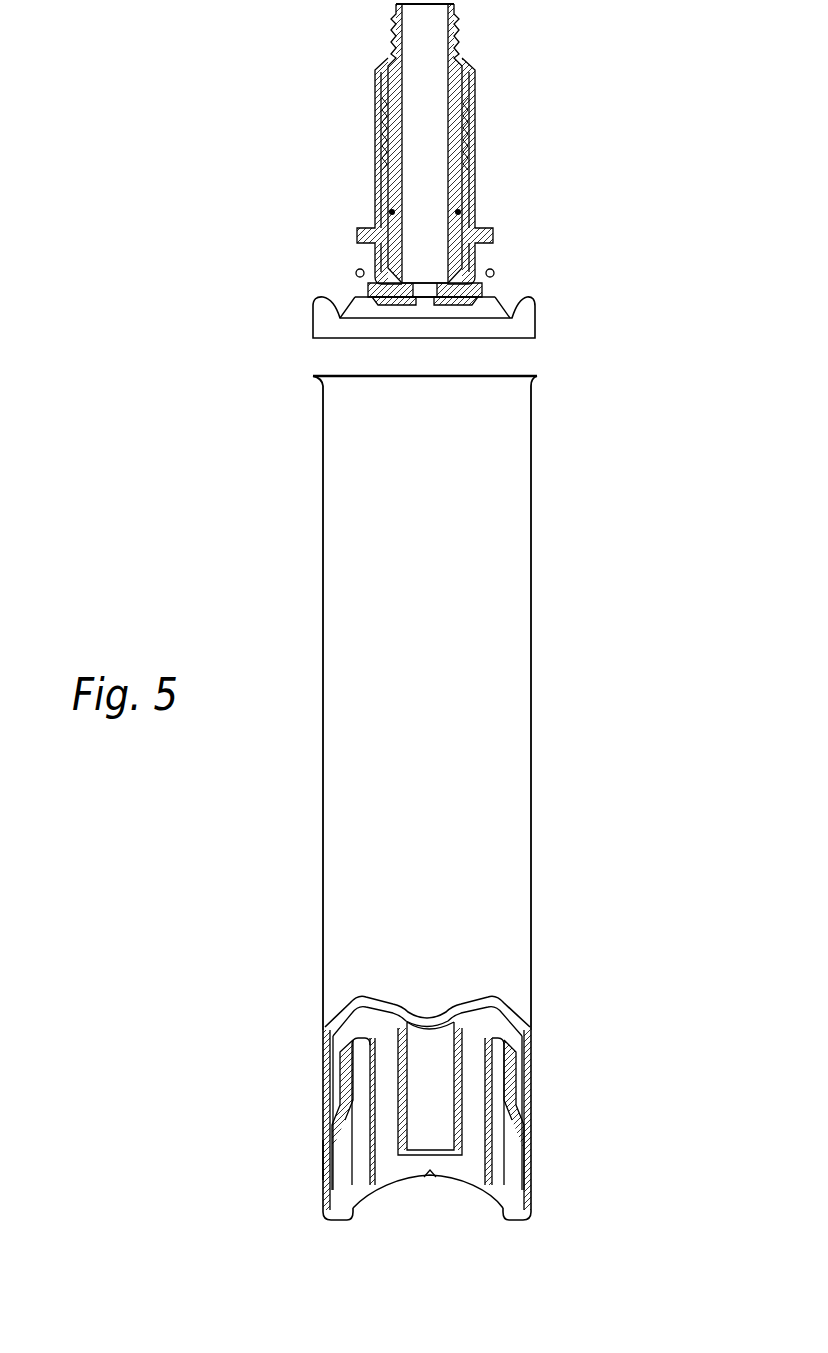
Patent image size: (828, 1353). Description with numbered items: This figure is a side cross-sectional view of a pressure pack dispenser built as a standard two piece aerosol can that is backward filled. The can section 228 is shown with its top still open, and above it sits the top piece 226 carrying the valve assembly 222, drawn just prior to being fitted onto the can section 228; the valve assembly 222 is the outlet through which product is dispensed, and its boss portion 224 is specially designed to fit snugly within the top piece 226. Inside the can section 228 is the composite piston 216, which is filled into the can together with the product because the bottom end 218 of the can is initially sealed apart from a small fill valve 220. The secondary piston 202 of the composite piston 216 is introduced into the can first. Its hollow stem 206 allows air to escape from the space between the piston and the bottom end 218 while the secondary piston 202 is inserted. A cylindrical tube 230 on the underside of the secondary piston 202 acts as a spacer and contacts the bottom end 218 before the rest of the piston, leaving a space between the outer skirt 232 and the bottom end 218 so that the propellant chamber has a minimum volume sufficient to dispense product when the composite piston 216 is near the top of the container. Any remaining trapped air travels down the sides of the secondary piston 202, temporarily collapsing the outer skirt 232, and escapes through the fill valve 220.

The valve assembly 222 is at (527, 158).
The boss portion 224 is at (476, 258).
The top piece 226 is at (535, 327).
The can section 228 is at (535, 793).
The composite piston 216 is at (510, 1004).
The hollow stem 206 is at (460, 1118).
The secondary piston 202 is at (536, 1160).
The outer skirt 232 is at (323, 1160).
The cylindrical tube 230 is at (495, 1190).
The fill valve 220 is at (430, 1177).
The bottom end 218 is at (472, 1182).